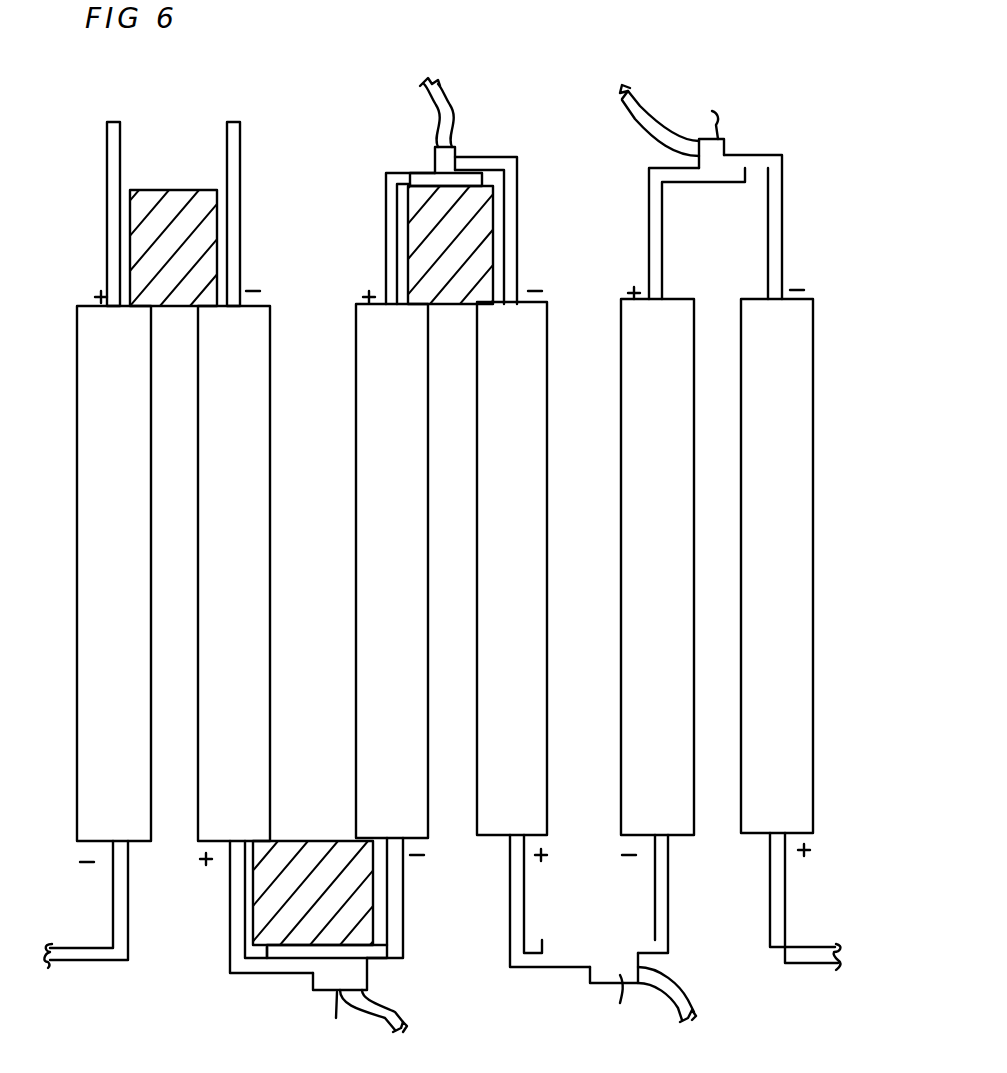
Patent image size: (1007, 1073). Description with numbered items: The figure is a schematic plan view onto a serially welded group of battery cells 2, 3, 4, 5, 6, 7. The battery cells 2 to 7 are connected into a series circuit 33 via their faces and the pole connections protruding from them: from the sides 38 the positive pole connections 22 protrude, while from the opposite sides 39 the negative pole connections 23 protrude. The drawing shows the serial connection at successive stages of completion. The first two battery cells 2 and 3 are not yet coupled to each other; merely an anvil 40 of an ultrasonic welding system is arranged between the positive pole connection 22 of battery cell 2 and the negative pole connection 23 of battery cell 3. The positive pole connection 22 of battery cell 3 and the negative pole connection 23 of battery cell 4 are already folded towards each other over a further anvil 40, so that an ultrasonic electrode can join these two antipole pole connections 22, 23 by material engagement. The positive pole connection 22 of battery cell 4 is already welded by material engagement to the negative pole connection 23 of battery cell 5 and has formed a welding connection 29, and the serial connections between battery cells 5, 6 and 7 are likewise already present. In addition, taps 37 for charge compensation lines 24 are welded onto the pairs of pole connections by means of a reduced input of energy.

The battery cell 2 is at (124, 598).
The battery cell 3 is at (242, 596).
The battery cell 4 is at (398, 594).
The battery cell 5 is at (507, 594).
The battery cell 6 is at (662, 594).
The battery cell 7 is at (774, 588).
The positive pole connection 22 is at (106, 238).
The negative pole connection 23 is at (232, 236).
The charge compensation line 24 is at (438, 75).
The welding connection 29 is at (462, 154).
The series circuit 33 is at (377, 146).
The tap 37 is at (515, 567).
The side 38 is at (450, 576).
The side 39 is at (442, 576).
The anvil 40 is at (161, 190).